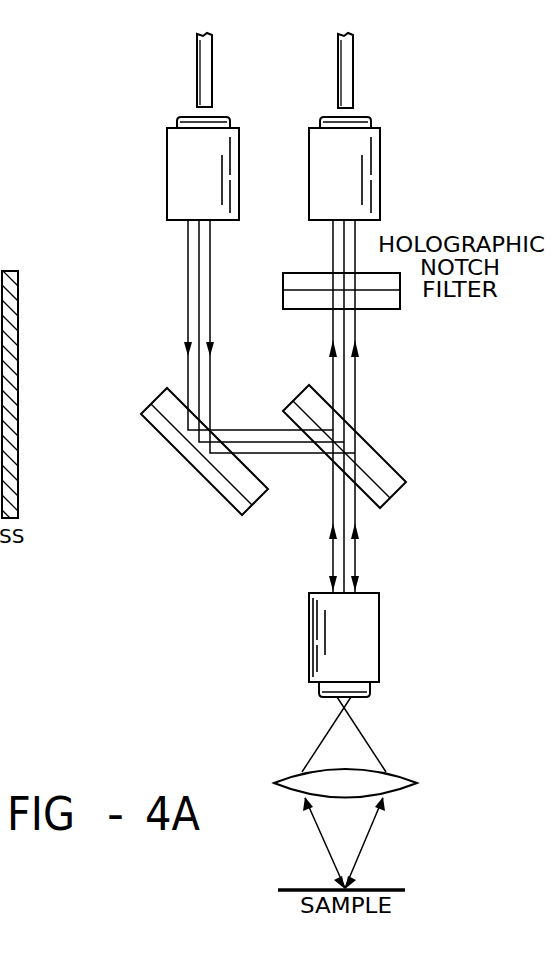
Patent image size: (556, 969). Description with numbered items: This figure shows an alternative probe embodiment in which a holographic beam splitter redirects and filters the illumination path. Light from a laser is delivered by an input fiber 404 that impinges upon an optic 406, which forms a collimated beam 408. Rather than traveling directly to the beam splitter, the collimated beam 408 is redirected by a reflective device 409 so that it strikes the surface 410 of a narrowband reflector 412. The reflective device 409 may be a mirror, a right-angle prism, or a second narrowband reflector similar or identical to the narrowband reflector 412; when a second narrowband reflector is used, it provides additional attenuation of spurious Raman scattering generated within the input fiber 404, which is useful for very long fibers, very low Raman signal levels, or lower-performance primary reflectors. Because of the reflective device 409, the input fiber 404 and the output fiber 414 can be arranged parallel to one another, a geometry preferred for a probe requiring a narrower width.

The input fiber 404 is at (197, 88).
The optic 406 is at (167, 188).
The collimated beam 408 is at (187, 333).
The reflective device 409 is at (176, 447).
The surface 410 is at (364, 471).
The narrowband reflector 412 is at (371, 448).
The output fiber 414 is at (353, 88).